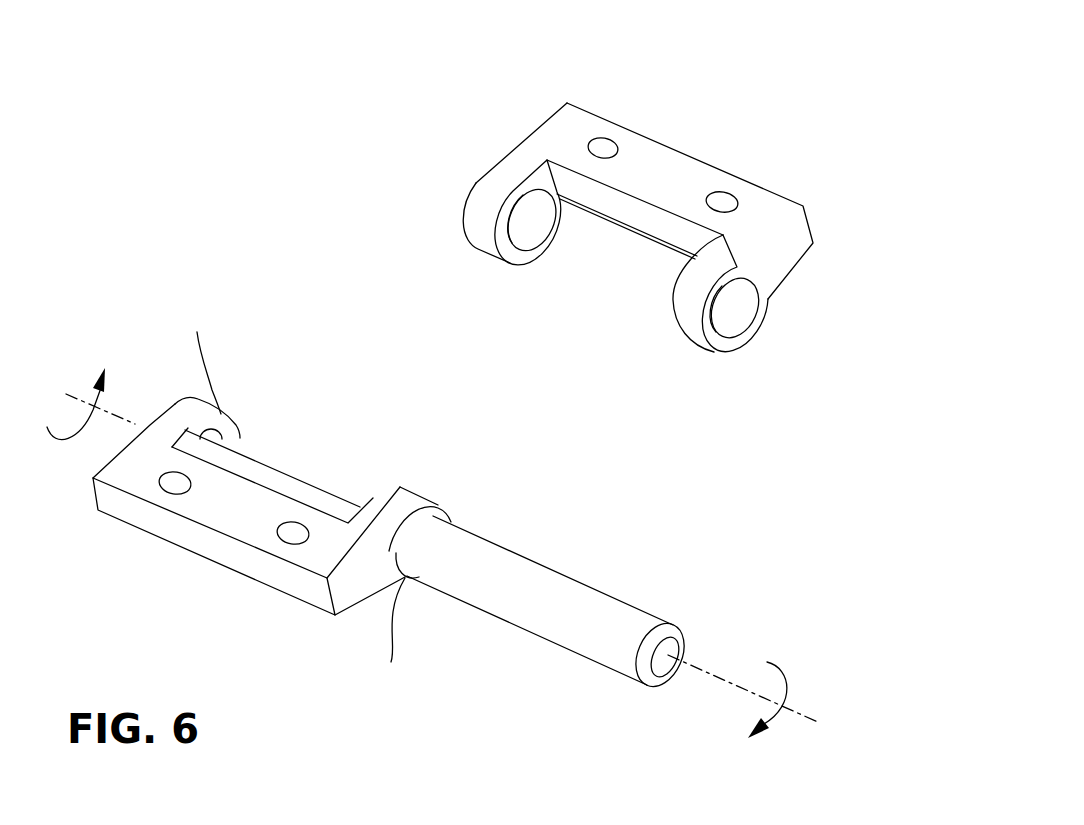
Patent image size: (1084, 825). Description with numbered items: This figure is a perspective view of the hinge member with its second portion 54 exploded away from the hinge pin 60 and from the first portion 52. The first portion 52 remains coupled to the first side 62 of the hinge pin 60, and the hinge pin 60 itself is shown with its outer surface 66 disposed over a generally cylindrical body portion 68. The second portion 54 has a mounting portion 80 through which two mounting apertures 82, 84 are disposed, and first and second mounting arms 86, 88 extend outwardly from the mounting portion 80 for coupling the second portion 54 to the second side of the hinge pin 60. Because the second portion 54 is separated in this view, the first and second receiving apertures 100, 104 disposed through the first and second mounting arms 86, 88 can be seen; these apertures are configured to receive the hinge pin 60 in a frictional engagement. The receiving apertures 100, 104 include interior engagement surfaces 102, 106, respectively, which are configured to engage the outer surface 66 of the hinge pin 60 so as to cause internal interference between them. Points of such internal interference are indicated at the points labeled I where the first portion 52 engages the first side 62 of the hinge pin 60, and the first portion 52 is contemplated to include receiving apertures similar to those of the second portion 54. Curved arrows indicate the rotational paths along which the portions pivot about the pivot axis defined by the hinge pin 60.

The first portion 52 is at (150, 560).
The second portion 54 is at (735, 140).
The hinge pin 60 is at (320, 480).
The first side 62 is at (253, 460).
The outer surface 66 is at (467, 550).
The cylindrical body portion 68 is at (593, 607).
The mounting portion 80 is at (666, 163).
The mounting aperture 82 is at (602, 146).
The mounting aperture 84 is at (728, 203).
The first mounting arm 86 is at (466, 238).
The second mounting arm 88 is at (690, 338).
The first receiving aperture 100 is at (514, 233).
The interior engagement surface 102 is at (530, 228).
The second receiving aperture 104 is at (740, 336).
The interior engagement surface 106 is at (745, 305).